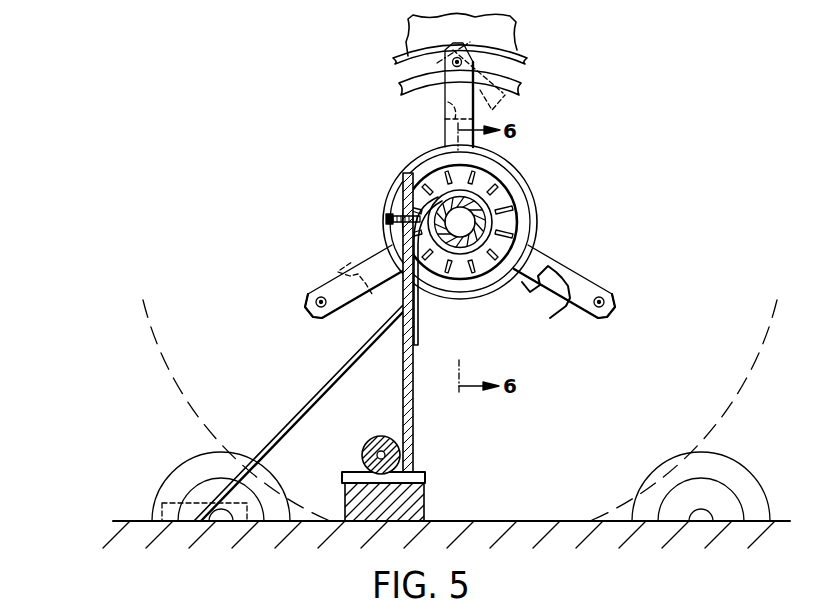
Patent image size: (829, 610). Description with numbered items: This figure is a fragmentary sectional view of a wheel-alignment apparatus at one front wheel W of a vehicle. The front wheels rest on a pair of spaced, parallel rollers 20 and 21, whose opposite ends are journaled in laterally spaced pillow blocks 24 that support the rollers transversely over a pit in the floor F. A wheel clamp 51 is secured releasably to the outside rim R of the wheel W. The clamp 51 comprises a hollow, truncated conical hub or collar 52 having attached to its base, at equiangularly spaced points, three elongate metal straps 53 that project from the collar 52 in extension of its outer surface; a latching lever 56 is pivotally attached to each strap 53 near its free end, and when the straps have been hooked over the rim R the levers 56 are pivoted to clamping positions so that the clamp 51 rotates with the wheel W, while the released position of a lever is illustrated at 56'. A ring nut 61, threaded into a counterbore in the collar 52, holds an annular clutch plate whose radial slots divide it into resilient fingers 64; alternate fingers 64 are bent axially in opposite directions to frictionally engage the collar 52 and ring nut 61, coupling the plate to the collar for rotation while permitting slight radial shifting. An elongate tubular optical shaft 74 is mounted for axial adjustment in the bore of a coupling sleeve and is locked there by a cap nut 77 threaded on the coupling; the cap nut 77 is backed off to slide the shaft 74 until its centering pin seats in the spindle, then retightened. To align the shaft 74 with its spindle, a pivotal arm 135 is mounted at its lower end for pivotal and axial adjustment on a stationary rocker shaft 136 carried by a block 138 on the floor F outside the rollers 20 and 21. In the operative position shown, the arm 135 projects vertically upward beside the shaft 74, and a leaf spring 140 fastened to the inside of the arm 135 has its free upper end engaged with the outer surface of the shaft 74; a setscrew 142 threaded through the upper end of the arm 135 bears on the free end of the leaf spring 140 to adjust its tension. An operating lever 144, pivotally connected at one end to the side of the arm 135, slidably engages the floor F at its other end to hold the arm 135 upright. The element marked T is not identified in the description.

The roller 20 is at (737, 477).
The roller 21 is at (162, 490).
The pillow blocks 24 is at (263, 505).
The wheel clamp 51 is at (383, 166).
The collar 52 is at (387, 192).
The metal straps 53 is at (445, 130).
The latching lever 56 is at (431, 227).
The latching lever in released position 56' is at (491, 81).
The ring nut 61 is at (503, 172).
The resilient fingers 64 is at (533, 220).
The optical shaft 74 is at (474, 246).
The cap nut 77 is at (500, 208).
The pivotal arm 135 is at (403, 381).
The rocker shaft 136 is at (366, 441).
The blocks 138 is at (425, 486).
The leaf spring 140 is at (418, 326).
The setscrew 142 is at (387, 219).
The operating lever 144 is at (299, 410).
The floor F is at (127, 521).
The outside rim R is at (395, 63).
The tire T is at (508, 37).
The front wheel W is at (405, 85).